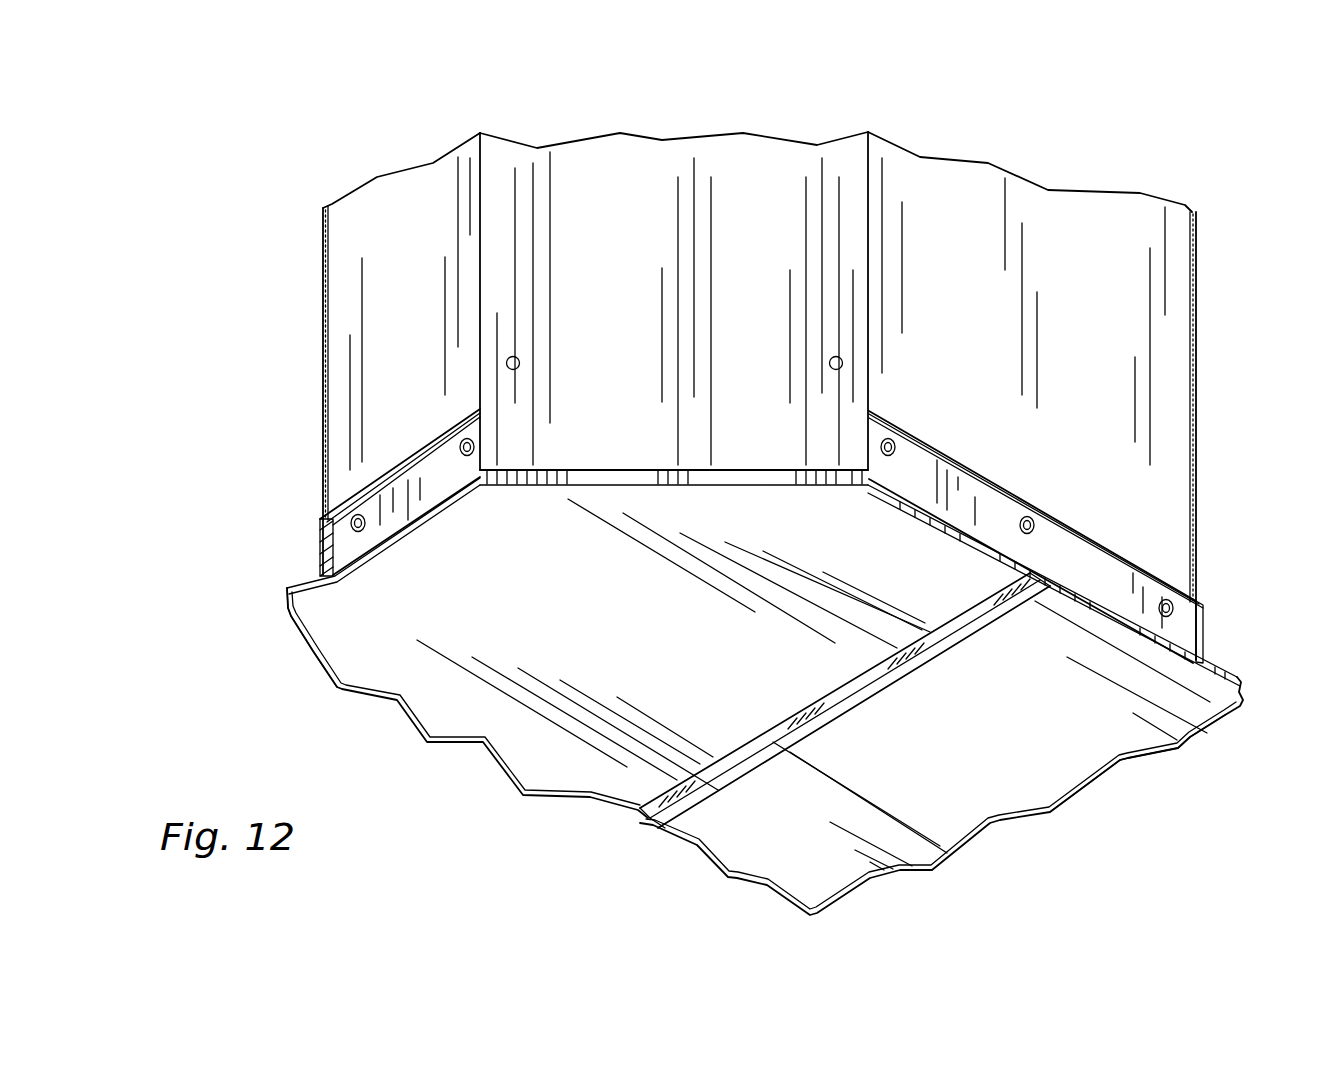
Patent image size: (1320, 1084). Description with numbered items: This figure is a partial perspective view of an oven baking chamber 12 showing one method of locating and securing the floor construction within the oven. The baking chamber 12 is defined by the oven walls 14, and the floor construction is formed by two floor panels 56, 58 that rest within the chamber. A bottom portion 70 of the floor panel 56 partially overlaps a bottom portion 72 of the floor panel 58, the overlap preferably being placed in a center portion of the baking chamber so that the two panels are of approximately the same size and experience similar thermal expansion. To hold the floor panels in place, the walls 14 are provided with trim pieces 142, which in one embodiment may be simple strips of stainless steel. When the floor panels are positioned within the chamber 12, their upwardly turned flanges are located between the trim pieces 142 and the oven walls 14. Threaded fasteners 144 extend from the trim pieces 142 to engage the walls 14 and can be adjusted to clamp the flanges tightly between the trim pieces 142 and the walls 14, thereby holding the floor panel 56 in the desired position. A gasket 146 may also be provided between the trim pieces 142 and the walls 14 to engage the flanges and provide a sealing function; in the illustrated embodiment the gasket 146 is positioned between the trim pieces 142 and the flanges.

The baking chamber 12 is at (723, 669).
The walls 14 is at (593, 228).
The floor panel 56 is at (360, 652).
The floor panel 58 is at (1035, 710).
The bottom portion 70 is at (542, 760).
The bottom portion 72 is at (968, 771).
The trim pieces 142 is at (407, 495).
The threaded fasteners 144 is at (364, 524).
The gasket 146 is at (430, 442).